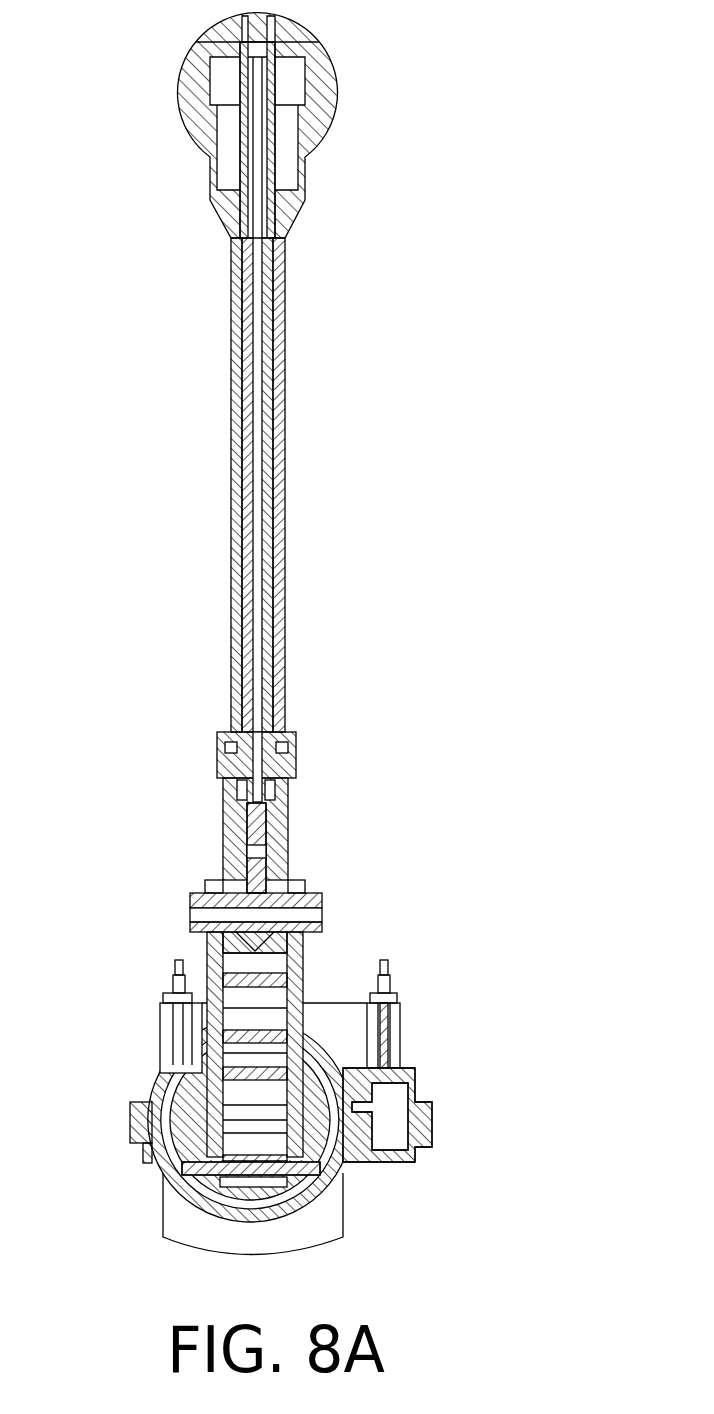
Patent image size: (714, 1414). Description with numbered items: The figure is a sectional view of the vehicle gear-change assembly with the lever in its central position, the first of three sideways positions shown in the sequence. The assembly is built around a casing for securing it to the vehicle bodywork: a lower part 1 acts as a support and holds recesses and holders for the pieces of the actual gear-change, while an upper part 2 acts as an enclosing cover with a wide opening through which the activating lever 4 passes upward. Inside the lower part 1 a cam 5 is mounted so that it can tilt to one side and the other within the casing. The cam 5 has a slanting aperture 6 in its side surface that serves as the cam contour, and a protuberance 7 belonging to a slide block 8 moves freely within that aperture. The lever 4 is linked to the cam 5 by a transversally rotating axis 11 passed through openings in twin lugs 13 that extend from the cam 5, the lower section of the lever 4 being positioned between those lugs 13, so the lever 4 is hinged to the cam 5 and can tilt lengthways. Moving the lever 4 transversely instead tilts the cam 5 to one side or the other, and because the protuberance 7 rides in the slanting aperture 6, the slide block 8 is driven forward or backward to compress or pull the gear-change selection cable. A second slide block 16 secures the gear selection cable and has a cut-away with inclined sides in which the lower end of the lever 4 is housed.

The lower part of the casing 1 is at (183, 1185).
The upper part of the casing 2 is at (153, 1092).
The activating lever 4 is at (237, 548).
The cam 5 is at (160, 1118).
The slanting aperture 6 is at (392, 1048).
The protuberance 7 is at (373, 1158).
The slide block 8 is at (388, 1083).
The transversally rotating axis 11 is at (281, 913).
The twin lugs 13 is at (205, 955).
The second slide block 16 is at (155, 1018).